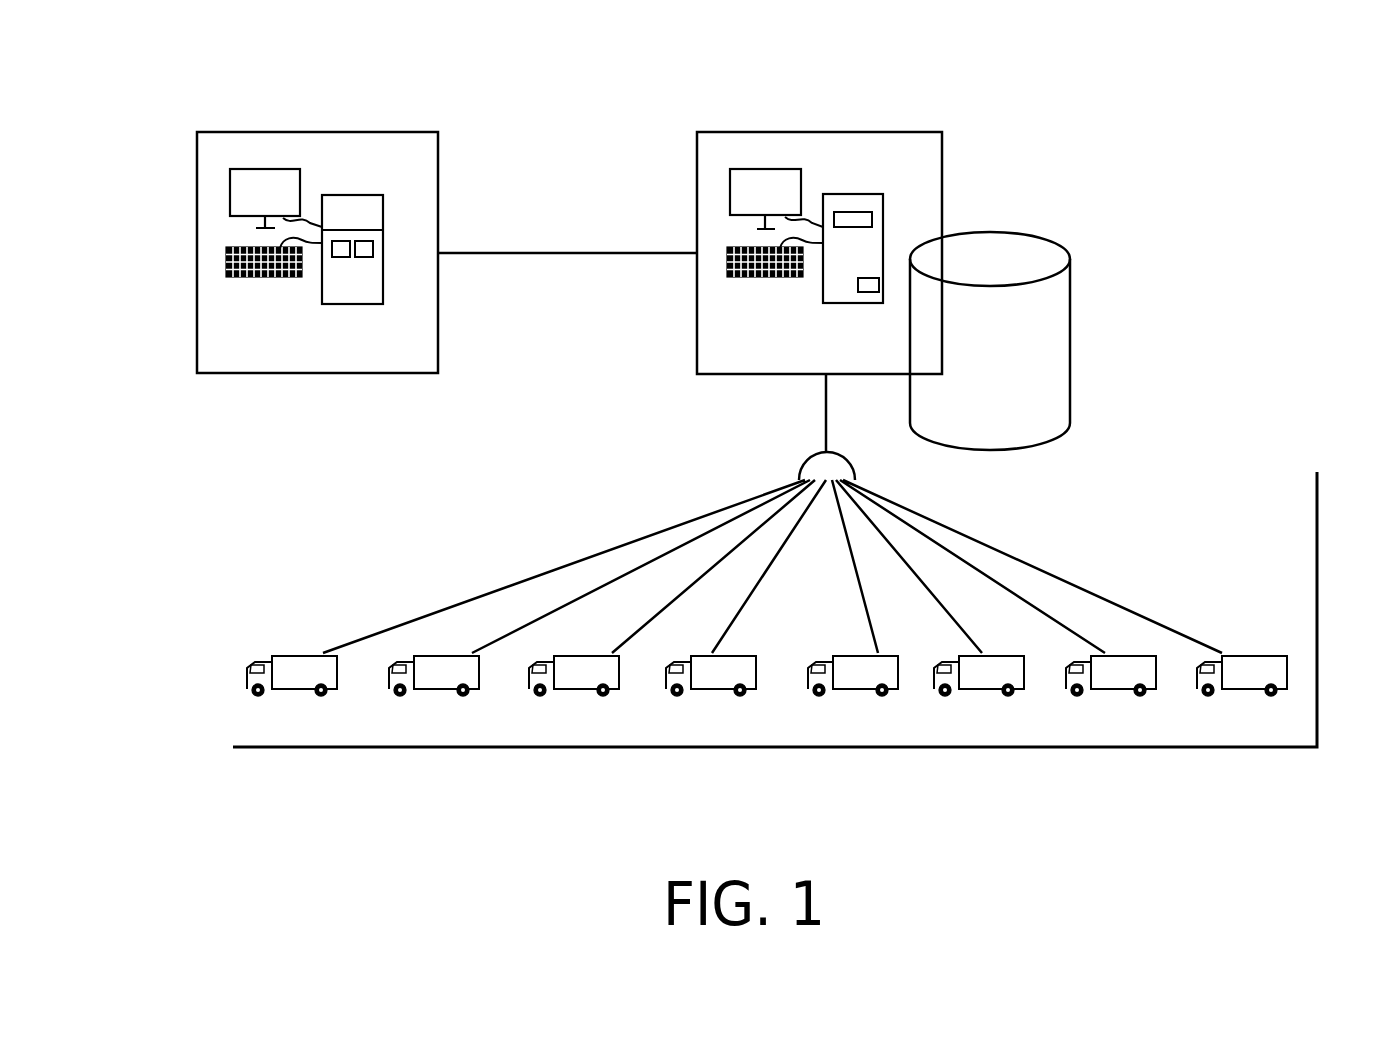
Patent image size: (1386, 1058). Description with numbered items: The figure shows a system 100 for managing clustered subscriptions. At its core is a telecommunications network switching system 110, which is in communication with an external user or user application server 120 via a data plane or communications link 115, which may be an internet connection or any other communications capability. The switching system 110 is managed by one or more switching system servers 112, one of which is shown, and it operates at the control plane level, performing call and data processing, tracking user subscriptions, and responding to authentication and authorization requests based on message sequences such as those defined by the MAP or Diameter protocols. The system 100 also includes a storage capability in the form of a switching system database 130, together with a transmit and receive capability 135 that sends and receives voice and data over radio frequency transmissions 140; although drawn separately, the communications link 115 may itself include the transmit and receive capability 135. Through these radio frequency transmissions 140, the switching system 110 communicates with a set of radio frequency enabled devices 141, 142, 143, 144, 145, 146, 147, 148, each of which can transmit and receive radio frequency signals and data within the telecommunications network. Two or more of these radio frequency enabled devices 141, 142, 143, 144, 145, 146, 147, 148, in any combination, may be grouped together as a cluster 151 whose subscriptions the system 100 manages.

The system 100 is at (255, 80).
The telecommunications network switching system 110 is at (822, 132).
The switching system server 112 is at (857, 194).
The communications link 115 is at (557, 252).
The user application server 120 is at (320, 131).
The switching system database 130 is at (1013, 369).
The transmit and receive capability 135 is at (803, 467).
The radio frequency transmissions 140 is at (945, 523).
The radio frequency enabled device 141 is at (310, 731).
The radio frequency enabled device 142 is at (452, 731).
The radio frequency enabled device 143 is at (592, 731).
The radio frequency enabled device 144 is at (729, 731).
The radio frequency enabled device 145 is at (871, 731).
The radio frequency enabled device 146 is at (997, 731).
The radio frequency enabled device 147 is at (1132, 731).
The radio frequency enabled device 148 is at (1270, 731).
The cluster 151 is at (408, 594).